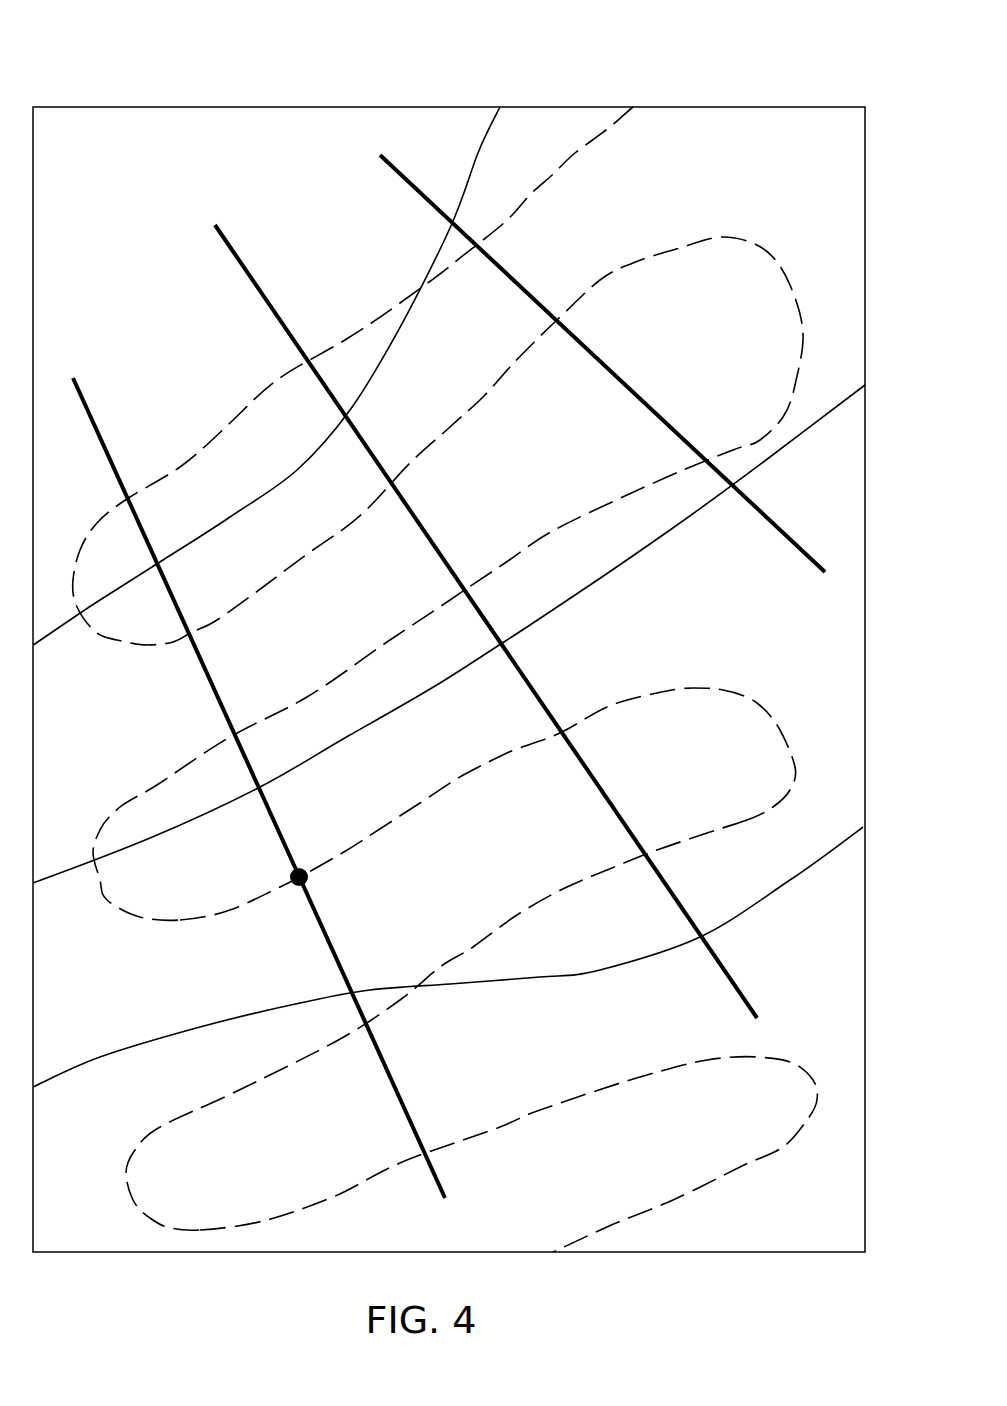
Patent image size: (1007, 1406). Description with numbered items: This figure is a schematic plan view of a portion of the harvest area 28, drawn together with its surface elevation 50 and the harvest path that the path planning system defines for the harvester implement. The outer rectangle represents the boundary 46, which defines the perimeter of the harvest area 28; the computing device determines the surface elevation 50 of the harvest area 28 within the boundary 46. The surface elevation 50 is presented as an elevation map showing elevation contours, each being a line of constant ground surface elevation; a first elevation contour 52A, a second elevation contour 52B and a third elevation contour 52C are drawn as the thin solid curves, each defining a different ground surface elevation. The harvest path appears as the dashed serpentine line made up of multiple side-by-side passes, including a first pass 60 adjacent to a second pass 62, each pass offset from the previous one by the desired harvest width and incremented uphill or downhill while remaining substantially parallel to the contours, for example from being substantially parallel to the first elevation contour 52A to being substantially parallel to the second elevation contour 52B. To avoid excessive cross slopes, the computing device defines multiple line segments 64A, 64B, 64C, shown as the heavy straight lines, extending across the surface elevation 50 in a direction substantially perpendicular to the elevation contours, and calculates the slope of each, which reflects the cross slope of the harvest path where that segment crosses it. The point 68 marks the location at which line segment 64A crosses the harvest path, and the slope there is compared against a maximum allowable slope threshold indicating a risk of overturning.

The harvest area 28 is at (690, 97).
The boundary 46 is at (600, 107).
The surface elevation 50 is at (220, 162).
The first elevation contour 52A is at (807, 873).
The second elevation contour 52B is at (837, 403).
The third elevation contour 52C is at (478, 154).
The first pass 60 is at (533, 905).
The second pass 62 is at (415, 805).
The line segment 64A is at (210, 677).
The line segment 64B is at (427, 530).
The line segment 64C is at (633, 387).
The point 68 is at (308, 880).